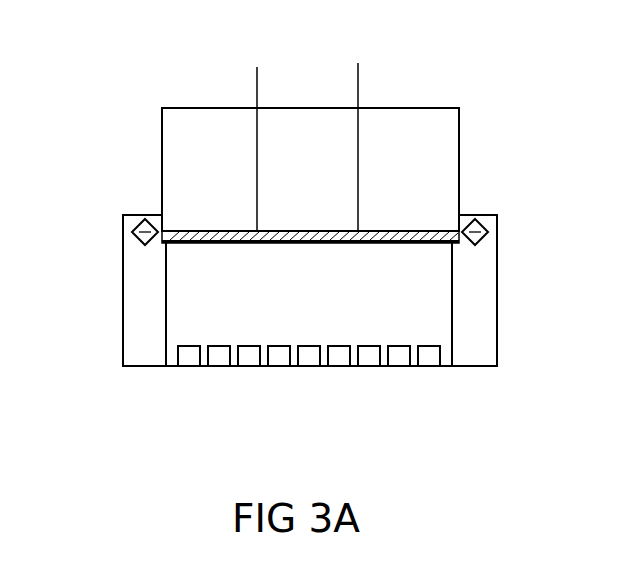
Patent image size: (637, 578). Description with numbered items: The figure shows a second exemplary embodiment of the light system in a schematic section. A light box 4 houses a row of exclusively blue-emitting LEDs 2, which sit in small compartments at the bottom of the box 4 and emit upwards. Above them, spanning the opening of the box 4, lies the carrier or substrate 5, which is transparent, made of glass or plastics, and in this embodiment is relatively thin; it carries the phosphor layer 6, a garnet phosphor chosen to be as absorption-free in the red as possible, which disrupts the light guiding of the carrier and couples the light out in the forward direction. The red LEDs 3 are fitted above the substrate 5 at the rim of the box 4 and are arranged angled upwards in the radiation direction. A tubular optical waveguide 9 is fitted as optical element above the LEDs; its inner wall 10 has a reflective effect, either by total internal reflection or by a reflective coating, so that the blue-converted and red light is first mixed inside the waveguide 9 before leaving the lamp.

The blue-emitting LEDs 2 is at (218, 353).
The red LEDs 3 is at (133, 232).
The light box 4 is at (123, 308).
The carrier or substrate 5 is at (257, 128).
The phosphor layer 6 is at (358, 128).
The tubular optical waveguide 9 is at (459, 126).
The inner wall 10 is at (181, 160).